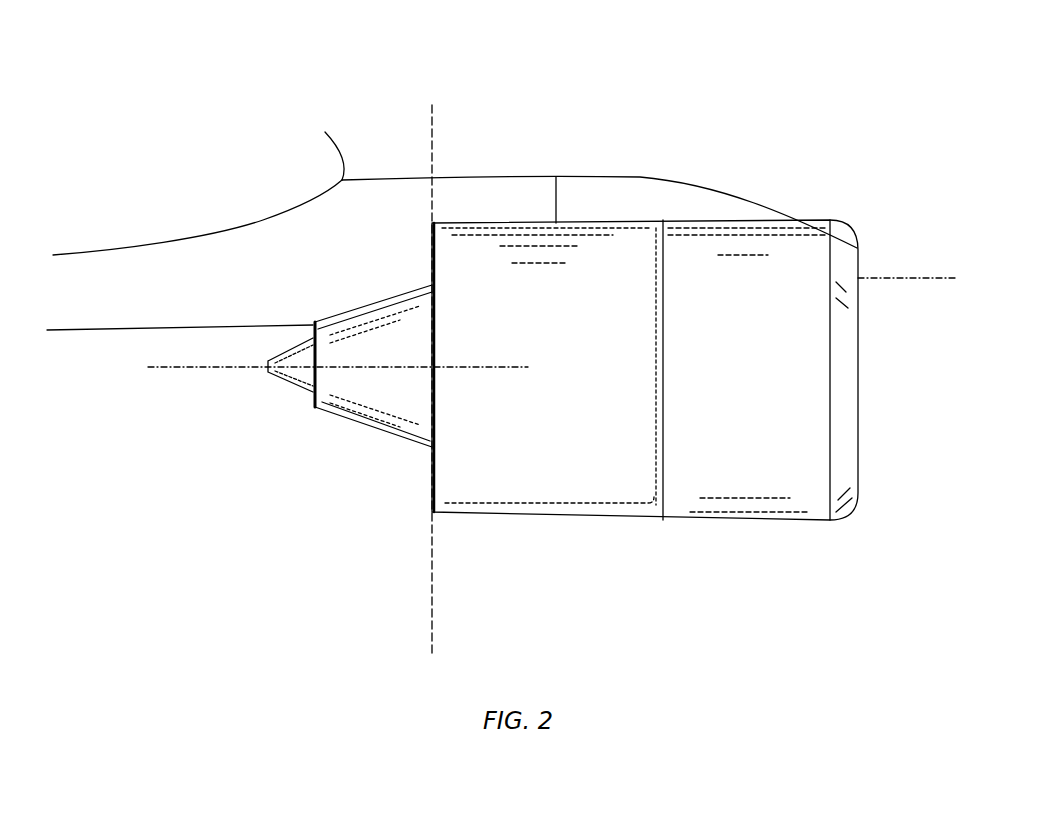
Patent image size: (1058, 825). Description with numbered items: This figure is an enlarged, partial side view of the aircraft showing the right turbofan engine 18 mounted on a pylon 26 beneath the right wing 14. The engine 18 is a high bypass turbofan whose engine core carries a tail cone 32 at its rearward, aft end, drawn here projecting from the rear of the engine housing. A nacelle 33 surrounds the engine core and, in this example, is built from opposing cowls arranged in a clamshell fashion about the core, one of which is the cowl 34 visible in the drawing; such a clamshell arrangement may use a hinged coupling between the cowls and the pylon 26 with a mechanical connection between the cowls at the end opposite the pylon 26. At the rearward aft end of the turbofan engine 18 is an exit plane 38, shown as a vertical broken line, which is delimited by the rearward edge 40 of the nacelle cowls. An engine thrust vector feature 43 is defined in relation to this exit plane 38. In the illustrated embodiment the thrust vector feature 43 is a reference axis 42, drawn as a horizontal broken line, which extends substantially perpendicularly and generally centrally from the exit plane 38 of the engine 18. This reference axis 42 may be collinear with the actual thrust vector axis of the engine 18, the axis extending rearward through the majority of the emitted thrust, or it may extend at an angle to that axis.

The right wing 14 is at (194, 243).
The pylon 26 is at (365, 207).
The rearward edge 40 is at (433, 270).
The tail cone 32 is at (360, 423).
The right engine 18 is at (763, 283).
The nacelle 33 is at (820, 218).
The cowl 34 is at (572, 377).
The engine thrust vector feature 43 is at (294, 381).
The reference axis 42 is at (177, 367).
The exit plane 38 is at (430, 572).